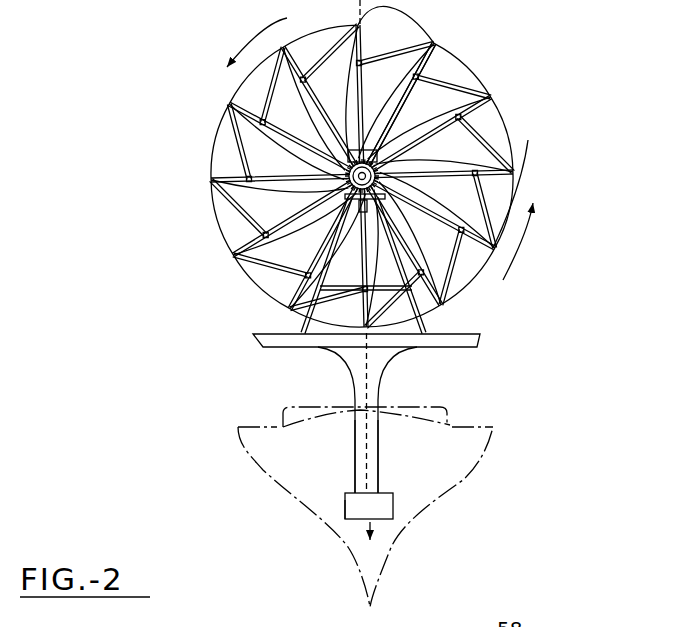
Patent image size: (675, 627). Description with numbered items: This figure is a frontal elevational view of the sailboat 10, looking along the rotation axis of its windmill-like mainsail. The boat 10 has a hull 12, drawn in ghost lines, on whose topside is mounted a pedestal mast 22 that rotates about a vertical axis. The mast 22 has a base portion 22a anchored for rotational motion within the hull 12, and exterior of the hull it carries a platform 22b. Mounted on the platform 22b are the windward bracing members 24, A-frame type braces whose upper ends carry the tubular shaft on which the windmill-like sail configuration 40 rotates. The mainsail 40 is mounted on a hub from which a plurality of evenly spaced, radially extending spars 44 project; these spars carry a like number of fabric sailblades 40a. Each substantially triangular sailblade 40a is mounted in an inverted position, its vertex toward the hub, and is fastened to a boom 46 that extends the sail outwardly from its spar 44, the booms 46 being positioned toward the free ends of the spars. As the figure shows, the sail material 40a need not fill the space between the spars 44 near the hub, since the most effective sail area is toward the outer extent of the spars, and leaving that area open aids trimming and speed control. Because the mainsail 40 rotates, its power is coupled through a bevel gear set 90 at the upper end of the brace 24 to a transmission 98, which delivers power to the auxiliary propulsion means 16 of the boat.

The sailboat 10 is at (515, 80).
The hull 12 is at (496, 444).
The auxiliary propulsion means 16 is at (397, 502).
The mast 22 is at (384, 377).
The base portion 22a is at (355, 464).
The platform 22b is at (477, 342).
The windward bracing members 24 is at (303, 301).
The windmill-like sail configuration 40 is at (226, 127).
The sailblades 40a is at (384, 40).
The spars 44 is at (437, 52).
The boom 46 is at (452, 84).
The bevel gear set 90 is at (343, 197).
The transmission 98 is at (345, 507).